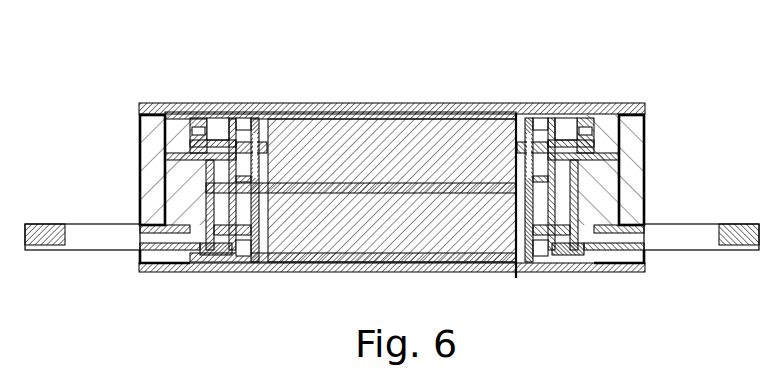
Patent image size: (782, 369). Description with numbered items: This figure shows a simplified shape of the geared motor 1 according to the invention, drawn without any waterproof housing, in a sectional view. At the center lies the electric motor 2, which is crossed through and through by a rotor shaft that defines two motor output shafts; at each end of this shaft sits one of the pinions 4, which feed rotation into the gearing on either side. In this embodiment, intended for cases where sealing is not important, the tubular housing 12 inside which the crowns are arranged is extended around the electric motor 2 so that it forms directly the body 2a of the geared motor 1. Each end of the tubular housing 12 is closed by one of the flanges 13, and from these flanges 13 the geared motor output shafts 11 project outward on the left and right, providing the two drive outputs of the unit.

The geared motor 1 is at (394, 83).
The electric motor 2 is at (305, 232).
The body 2a is at (478, 103).
The pinions 4 is at (263, 272).
The geared motor output shafts 11 is at (82, 250).
The tubular housing 12 is at (242, 103).
The flanges 13 is at (140, 140).